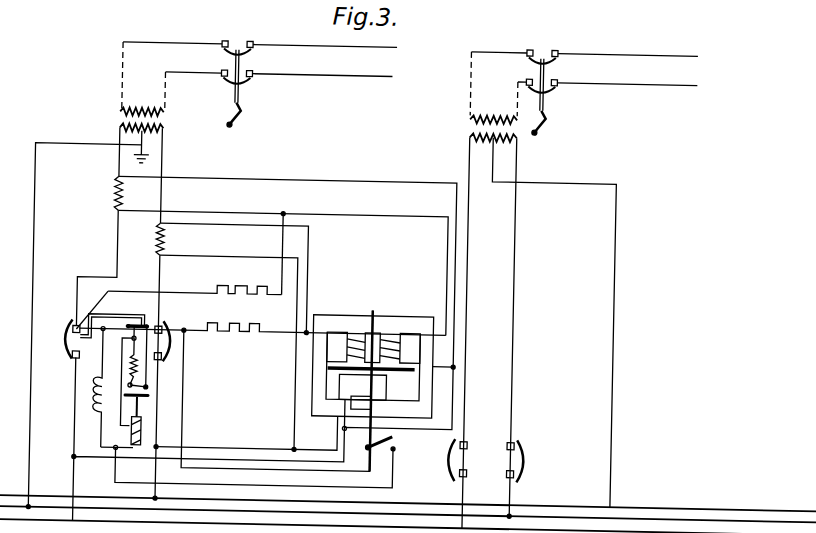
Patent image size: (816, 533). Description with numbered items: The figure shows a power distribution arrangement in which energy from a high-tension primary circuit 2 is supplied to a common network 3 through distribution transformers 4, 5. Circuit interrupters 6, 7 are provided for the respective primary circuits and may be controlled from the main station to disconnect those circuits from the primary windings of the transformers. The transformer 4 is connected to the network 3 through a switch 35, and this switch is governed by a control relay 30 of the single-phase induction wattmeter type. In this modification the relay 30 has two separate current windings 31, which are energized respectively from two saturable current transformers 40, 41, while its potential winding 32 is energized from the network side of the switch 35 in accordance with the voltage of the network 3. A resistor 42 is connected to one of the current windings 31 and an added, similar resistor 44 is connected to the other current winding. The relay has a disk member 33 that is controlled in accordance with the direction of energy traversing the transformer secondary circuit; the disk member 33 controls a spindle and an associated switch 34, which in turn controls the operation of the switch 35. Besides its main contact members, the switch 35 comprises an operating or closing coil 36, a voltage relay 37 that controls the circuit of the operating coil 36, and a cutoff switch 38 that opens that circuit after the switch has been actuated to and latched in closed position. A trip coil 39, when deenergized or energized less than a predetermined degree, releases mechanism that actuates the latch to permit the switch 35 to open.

The high-tension primary circuit 2 is at (656, 68).
The common network 3 is at (398, 528).
The distribution transformer 4 is at (160, 121).
The distribution transformer 5 is at (465, 130).
The circuit interrupter 6 is at (250, 63).
The circuit interrupter 7 is at (548, 69).
The relay 30 is at (493, 390).
The current winding 31 is at (405, 391).
The potential winding 32 is at (388, 392).
The disk member 33 is at (402, 372).
The switch 34 is at (396, 449).
The switch 35 is at (66, 348).
The operating coil 36 is at (140, 380).
The voltage relay 37 is at (144, 437).
The cutoff switch 38 is at (150, 329).
The trip coil 39 is at (94, 404).
The saturable current transformer 40 is at (112, 199).
The saturable current transformer 41 is at (155, 244).
The resistor 42 is at (250, 343).
The resistor 44 is at (254, 290).